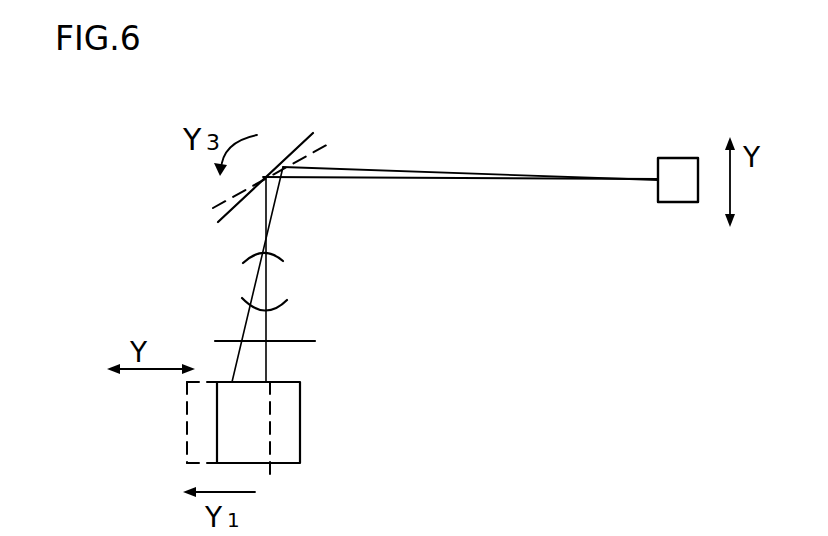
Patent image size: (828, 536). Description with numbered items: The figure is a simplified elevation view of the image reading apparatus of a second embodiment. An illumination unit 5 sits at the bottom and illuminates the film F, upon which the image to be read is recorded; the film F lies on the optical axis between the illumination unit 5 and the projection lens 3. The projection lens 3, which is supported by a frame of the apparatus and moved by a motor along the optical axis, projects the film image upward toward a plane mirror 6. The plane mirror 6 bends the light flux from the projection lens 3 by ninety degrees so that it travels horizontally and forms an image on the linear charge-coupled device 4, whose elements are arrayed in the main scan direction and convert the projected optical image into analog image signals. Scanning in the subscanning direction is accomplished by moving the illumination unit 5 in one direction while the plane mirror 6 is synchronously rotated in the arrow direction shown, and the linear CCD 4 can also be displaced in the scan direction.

The projection lens 3 is at (279, 257).
The linear charge-coupled device 4 is at (672, 203).
The illumination unit 5 is at (300, 423).
The plane mirror 6 is at (287, 153).
The film F is at (295, 338).